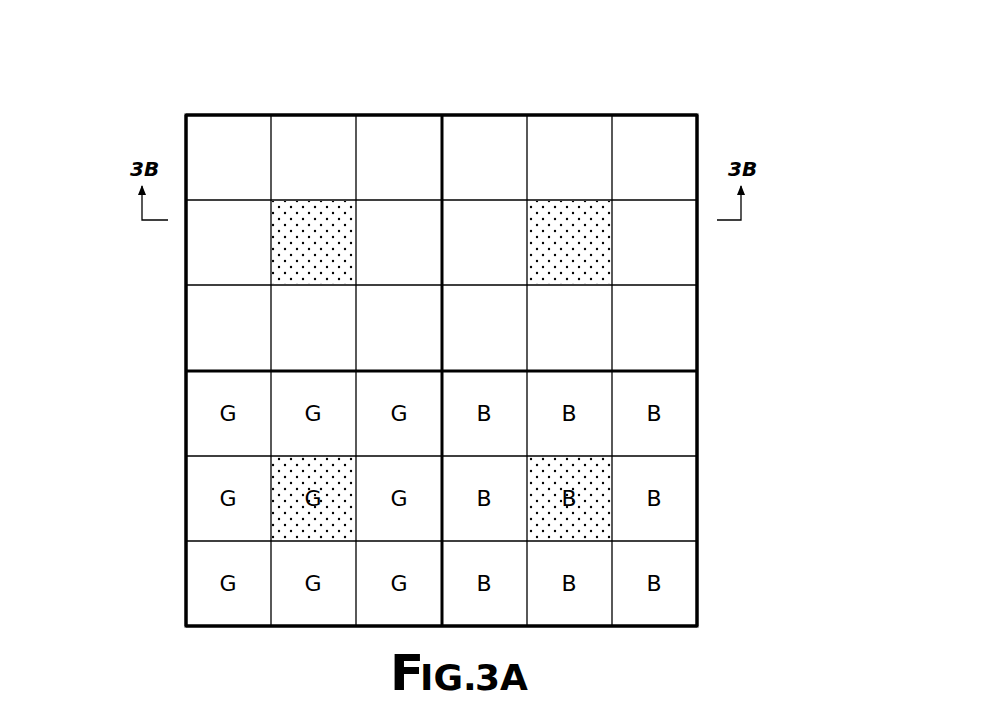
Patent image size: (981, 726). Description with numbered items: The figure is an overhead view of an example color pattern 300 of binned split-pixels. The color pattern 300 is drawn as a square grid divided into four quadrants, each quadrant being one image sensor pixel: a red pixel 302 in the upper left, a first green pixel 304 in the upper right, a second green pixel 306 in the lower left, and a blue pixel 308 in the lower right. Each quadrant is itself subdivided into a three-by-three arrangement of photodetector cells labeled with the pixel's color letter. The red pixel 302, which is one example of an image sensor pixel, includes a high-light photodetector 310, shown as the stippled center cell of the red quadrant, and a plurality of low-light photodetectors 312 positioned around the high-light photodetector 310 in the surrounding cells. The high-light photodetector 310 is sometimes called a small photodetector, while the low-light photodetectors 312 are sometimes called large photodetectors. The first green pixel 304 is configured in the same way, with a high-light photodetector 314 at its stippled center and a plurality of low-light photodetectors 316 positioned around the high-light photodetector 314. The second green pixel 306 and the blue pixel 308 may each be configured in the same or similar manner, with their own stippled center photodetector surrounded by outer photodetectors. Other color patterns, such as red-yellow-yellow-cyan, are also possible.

The color pattern 300 is at (130, 58).
The red pixel 302 is at (186, 116).
The first green pixel 304 is at (697, 116).
The second green pixel 306 is at (186, 623).
The blue pixel 308 is at (697, 623).
The high-light photodetector 310 is at (298, 213).
The low-light photodetectors 312 is at (130, 282).
The high-light photodetector 314 is at (547, 213).
The low-light photodetectors 316 is at (492, 130).